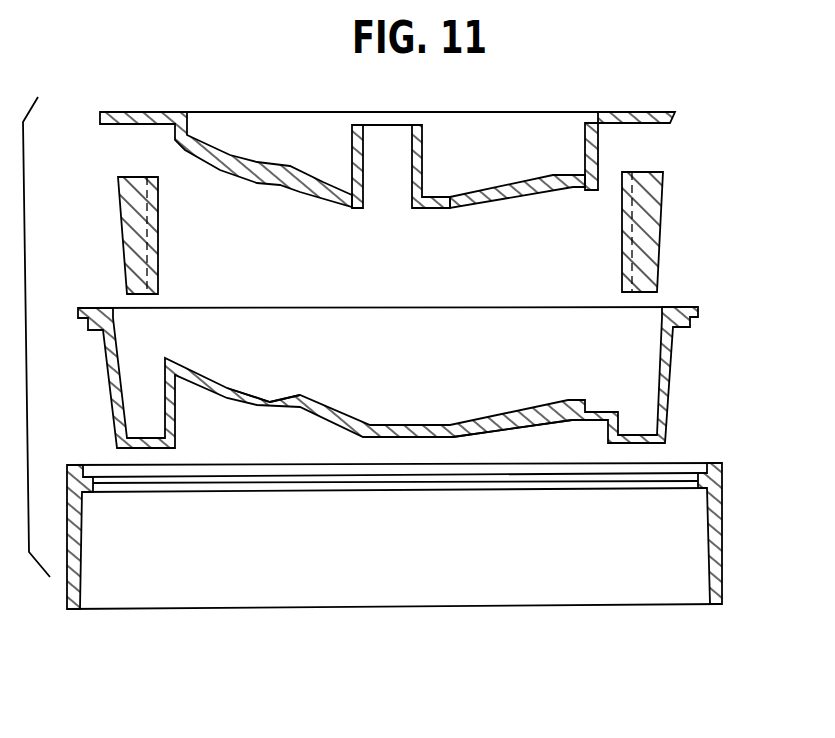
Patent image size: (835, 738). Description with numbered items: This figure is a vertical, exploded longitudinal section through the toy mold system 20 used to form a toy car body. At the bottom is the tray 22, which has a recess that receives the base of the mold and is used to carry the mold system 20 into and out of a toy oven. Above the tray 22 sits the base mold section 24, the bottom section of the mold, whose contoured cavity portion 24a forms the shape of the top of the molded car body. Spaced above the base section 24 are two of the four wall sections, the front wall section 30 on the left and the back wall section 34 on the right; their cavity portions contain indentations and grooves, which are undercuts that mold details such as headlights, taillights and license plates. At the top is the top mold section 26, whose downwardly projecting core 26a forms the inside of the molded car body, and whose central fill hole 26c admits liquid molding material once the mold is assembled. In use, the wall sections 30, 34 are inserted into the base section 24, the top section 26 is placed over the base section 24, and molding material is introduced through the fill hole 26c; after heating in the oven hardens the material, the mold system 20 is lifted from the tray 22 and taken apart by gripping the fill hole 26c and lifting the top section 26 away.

The toy mold system 20 is at (730, 197).
The tray 22 is at (715, 542).
The base mold section 24 is at (668, 392).
The cavity portion 24a is at (467, 402).
The top mold section 26 is at (590, 152).
The core 26a is at (485, 192).
The fill hole 26c is at (418, 148).
The front wall section 30 is at (125, 227).
The back wall section 34 is at (652, 253).